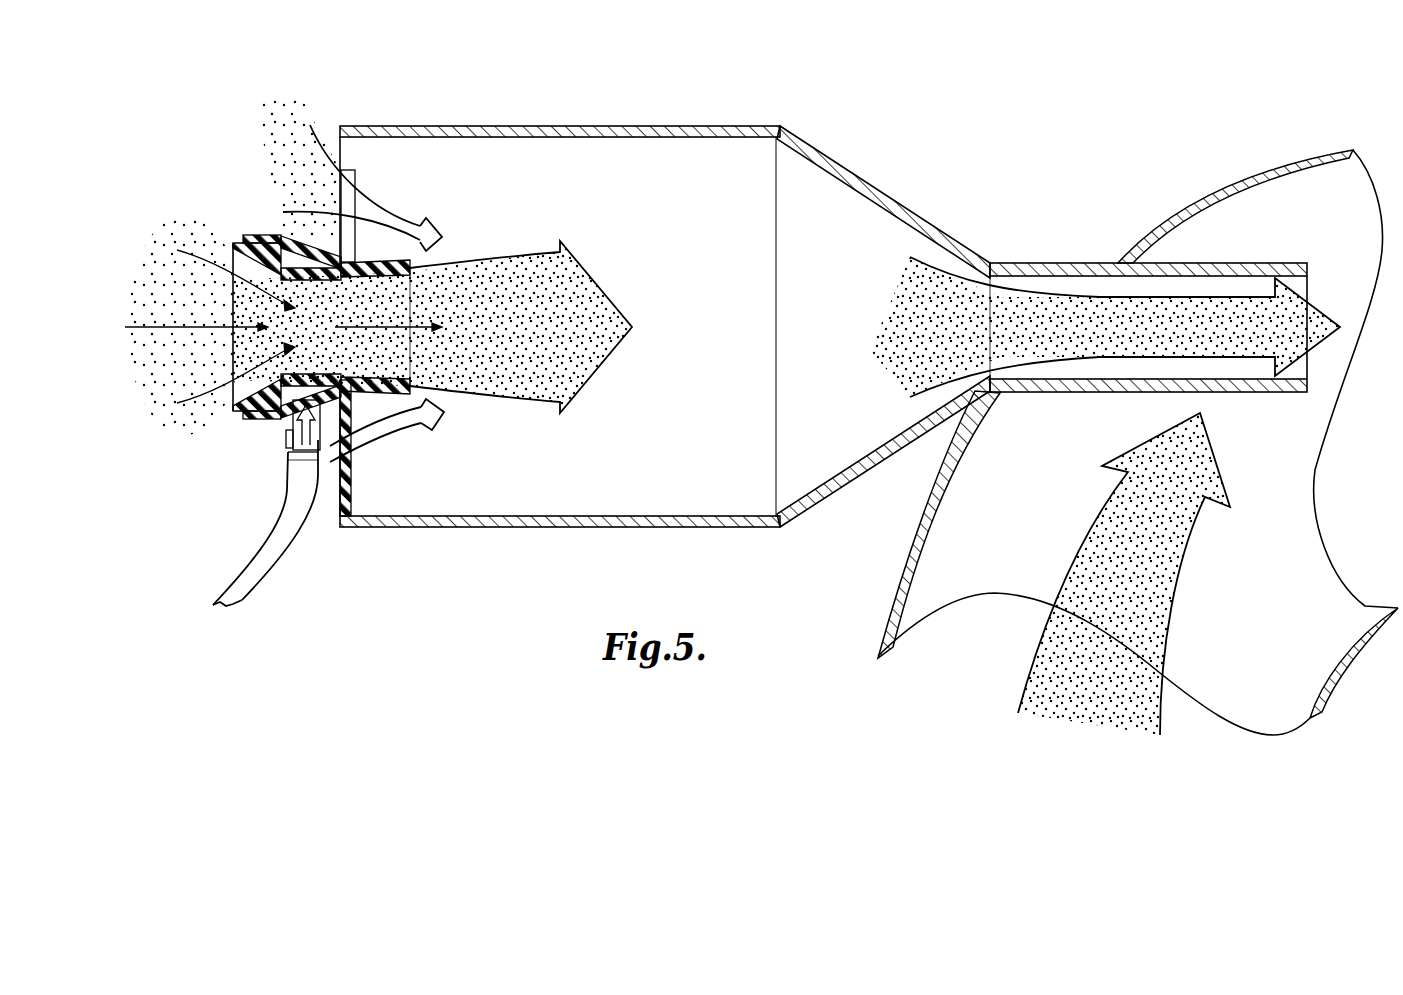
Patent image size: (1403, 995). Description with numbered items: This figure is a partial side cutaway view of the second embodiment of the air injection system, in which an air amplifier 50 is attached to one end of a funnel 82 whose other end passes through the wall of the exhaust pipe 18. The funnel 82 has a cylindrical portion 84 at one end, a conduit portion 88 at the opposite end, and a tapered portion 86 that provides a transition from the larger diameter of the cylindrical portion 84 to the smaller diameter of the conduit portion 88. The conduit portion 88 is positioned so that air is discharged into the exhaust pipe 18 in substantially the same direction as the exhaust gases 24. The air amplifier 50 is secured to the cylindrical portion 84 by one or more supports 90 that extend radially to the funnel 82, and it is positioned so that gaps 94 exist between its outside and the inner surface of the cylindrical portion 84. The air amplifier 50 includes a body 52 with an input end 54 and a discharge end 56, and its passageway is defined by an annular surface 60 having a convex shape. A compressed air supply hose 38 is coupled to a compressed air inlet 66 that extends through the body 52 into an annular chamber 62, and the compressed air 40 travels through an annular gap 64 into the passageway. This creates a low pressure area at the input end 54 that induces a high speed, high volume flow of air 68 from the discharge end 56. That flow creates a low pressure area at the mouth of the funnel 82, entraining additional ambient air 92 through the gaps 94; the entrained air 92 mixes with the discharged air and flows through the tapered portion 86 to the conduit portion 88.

The exhaust pipe 18 is at (888, 592).
The exhaust gases 24 is at (1168, 610).
The compressed air supply hose 38 is at (265, 537).
The compressed air 40 is at (325, 428).
The air amplifier 50 is at (243, 218).
The body 52 is at (262, 420).
The input end 54 is at (232, 405).
The discharge end 56 is at (412, 269).
The annular surface 60 is at (410, 372).
The annular chamber 62 is at (352, 243).
The annular gap 64 is at (287, 437).
The compressed air inlet 66 is at (286, 460).
The flow of air 68 is at (587, 300).
The funnel 82 is at (736, 72).
The cylindrical portion 84 is at (560, 127).
The tapered portion 86 is at (833, 158).
The conduit portion 88 is at (1220, 262).
The supports 90 is at (352, 500).
The entrained air 92 is at (386, 210).
The gaps 94 is at (372, 168).